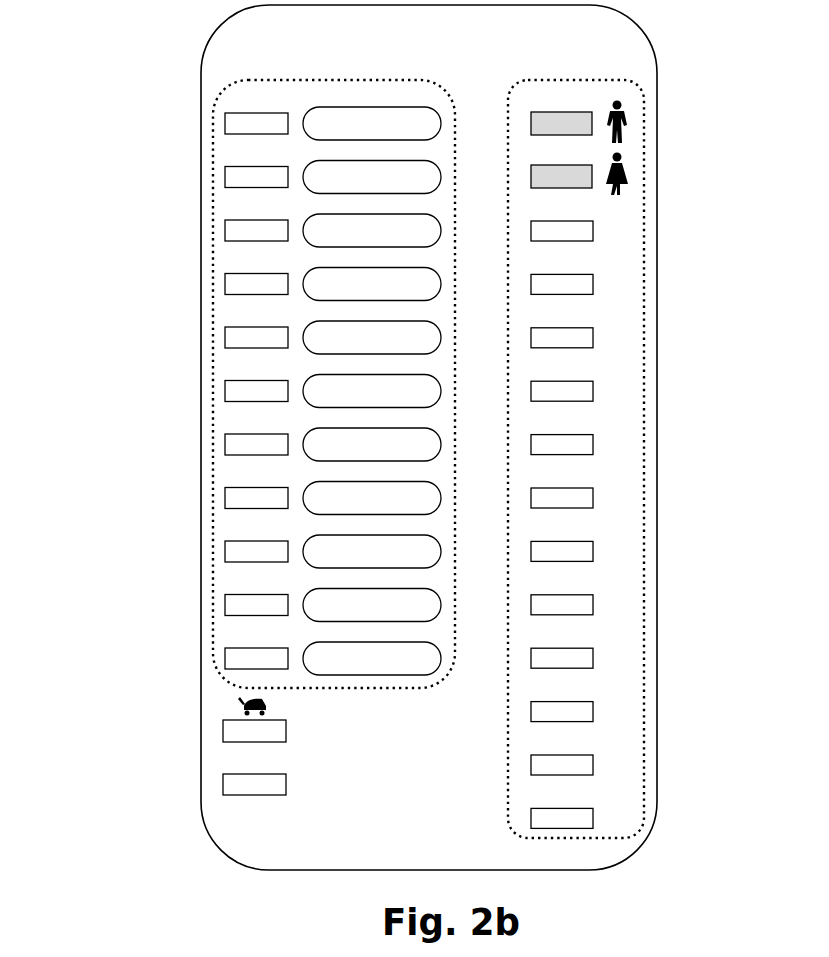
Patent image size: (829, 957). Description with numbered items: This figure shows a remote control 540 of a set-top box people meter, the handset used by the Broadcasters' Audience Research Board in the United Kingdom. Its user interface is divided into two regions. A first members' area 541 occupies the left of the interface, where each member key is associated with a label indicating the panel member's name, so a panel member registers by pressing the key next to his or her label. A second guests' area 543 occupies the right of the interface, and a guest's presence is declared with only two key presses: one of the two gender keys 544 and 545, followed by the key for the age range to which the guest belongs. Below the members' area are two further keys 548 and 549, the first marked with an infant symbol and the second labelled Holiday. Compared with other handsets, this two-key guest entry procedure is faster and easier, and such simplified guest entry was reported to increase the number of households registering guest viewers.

The remote control 540 is at (177, 130).
The first members' area 541 is at (215, 178).
The second guests' area 543 is at (650, 338).
The gender key 544 is at (642, 121).
The gender key 545 is at (633, 179).
The infant / stroller selector 548 is at (223, 728).
The holiday selector 549 is at (223, 783).